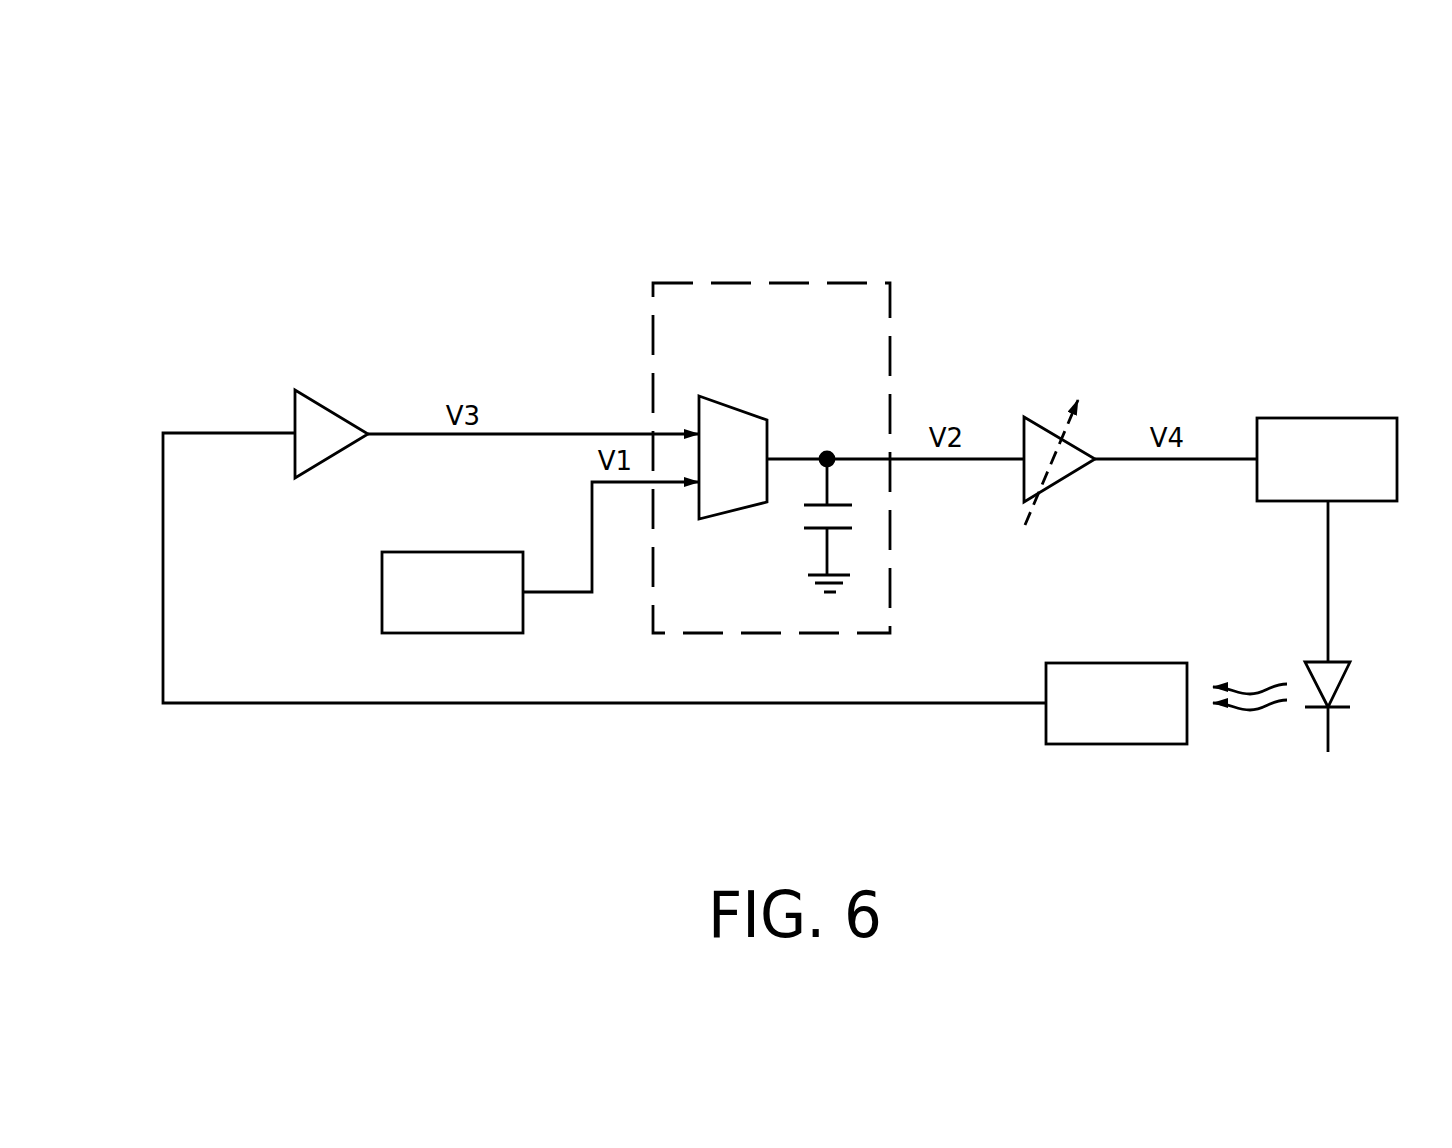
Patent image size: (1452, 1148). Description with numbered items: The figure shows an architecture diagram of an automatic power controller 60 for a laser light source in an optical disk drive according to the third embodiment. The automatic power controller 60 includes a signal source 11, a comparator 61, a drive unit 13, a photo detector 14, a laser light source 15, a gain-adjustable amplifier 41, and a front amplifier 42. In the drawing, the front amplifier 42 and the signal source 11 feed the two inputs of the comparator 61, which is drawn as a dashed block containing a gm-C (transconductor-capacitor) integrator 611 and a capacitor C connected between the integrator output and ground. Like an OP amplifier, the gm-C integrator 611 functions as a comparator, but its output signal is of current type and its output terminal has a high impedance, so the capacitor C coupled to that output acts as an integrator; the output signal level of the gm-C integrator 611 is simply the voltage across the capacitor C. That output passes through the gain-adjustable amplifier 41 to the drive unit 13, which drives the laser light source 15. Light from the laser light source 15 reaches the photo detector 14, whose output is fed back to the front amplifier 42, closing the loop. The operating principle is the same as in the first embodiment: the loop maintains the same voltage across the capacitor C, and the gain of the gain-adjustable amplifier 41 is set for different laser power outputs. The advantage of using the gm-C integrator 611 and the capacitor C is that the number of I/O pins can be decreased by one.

The automatic power controller 60 is at (328, 173).
The front amplifier 42 is at (318, 420).
The signal source 11 is at (450, 633).
The comparator 61 is at (767, 307).
The gm-C integrator 611 is at (732, 495).
The gain-adjustable amplifier 41 is at (1038, 433).
The drive unit 13 is at (1327, 422).
The laser light source 15 is at (1357, 687).
The photo detector 14 is at (1117, 668).